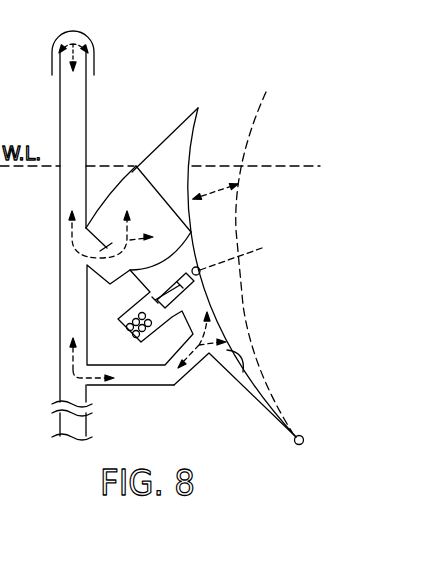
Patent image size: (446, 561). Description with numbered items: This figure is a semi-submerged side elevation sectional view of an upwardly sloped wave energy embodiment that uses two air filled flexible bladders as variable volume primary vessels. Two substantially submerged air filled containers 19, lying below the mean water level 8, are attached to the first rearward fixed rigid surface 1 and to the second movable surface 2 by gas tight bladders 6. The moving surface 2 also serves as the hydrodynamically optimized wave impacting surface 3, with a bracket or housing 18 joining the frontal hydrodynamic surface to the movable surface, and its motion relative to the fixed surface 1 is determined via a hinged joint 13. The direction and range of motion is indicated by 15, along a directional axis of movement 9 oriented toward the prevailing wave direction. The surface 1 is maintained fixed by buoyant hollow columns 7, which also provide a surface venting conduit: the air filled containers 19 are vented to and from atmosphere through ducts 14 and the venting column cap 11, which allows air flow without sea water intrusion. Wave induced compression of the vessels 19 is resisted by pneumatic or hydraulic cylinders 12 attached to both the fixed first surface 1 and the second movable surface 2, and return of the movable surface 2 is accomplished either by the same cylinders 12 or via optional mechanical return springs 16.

The first rearward fixed rigid surface 1 is at (96, 231).
The second movable surface 2 is at (149, 183).
The hydrodynamically optimized wave impacting surface 3 is at (192, 158).
The gas tight bladder 6 is at (128, 176).
The buoyant column 7 is at (59, 323).
The mean water level 8 is at (287, 163).
The directional axis of movement 9 is at (242, 252).
The venting column cap 11 is at (88, 36).
The pneumatic or hydraulic cylinder 12 is at (200, 287).
The hinged joint 13 is at (293, 444).
The duct 14 is at (84, 249).
The direction and range of motion 15 is at (213, 190).
The mechanical return spring 16 is at (138, 311).
The bracket or housing 18 is at (175, 146).
The air filled container 19 is at (160, 224).